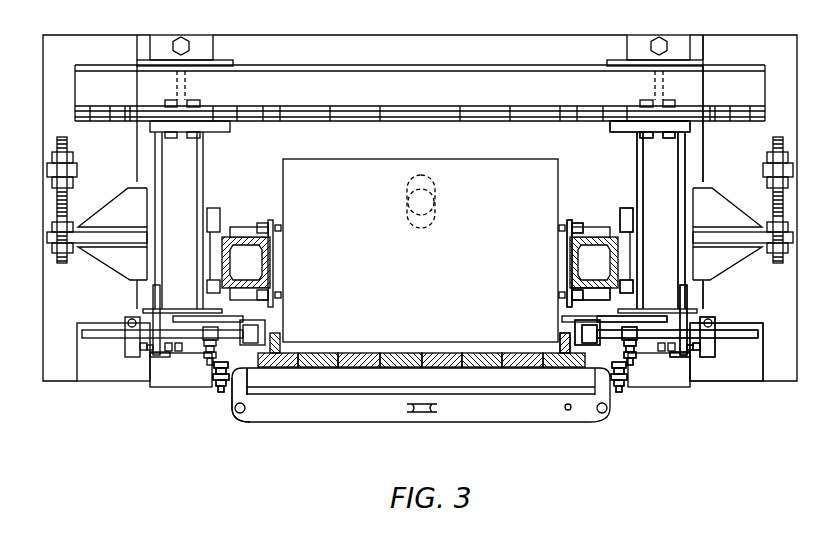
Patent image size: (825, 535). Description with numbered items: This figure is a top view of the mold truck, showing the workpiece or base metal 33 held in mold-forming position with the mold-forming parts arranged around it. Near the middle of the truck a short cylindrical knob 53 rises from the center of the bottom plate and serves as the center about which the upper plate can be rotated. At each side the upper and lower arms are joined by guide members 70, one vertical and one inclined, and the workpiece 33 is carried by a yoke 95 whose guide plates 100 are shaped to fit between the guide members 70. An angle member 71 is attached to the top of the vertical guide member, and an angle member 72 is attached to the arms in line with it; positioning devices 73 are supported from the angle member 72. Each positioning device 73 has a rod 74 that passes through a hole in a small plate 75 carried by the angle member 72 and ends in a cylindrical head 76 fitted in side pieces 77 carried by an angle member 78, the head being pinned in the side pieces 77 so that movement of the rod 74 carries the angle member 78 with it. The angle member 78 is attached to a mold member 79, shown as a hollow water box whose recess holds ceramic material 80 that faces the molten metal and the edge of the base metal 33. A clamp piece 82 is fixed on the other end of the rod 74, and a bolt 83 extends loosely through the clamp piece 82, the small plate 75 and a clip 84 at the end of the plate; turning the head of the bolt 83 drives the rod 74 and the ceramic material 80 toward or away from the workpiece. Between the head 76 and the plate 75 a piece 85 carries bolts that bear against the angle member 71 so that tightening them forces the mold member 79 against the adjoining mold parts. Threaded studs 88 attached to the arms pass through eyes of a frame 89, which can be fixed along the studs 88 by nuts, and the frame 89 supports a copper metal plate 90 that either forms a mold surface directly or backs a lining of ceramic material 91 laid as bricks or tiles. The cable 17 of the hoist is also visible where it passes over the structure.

The cable 17 is at (649, 130).
The base metal 33 is at (452, 161).
The cylindrical knob 53 is at (421, 200).
The guide members 70 is at (629, 220).
The angle member 71 is at (622, 297).
The angle member 72 is at (704, 292).
The positioning devices 73 is at (727, 361).
The rod 74 is at (748, 326).
The small plate 75 is at (683, 297).
The cylindrical head 76 is at (600, 338).
The side pieces 77 is at (621, 358).
The angle member 78 is at (580, 316).
The mold member 79 is at (576, 330).
The ceramic material 80 is at (566, 338).
The clamp piece 82 is at (722, 341).
The bolt 83 is at (693, 350).
The clip 84 is at (683, 355).
The piece 85 is at (634, 349).
The threaded studs 88 is at (220, 386).
The frame 89 is at (247, 383).
The metal plate 90 is at (365, 367).
The ceramic material 91 is at (322, 368).
The yoke 95 is at (587, 215).
The guide plates 100 is at (633, 250).